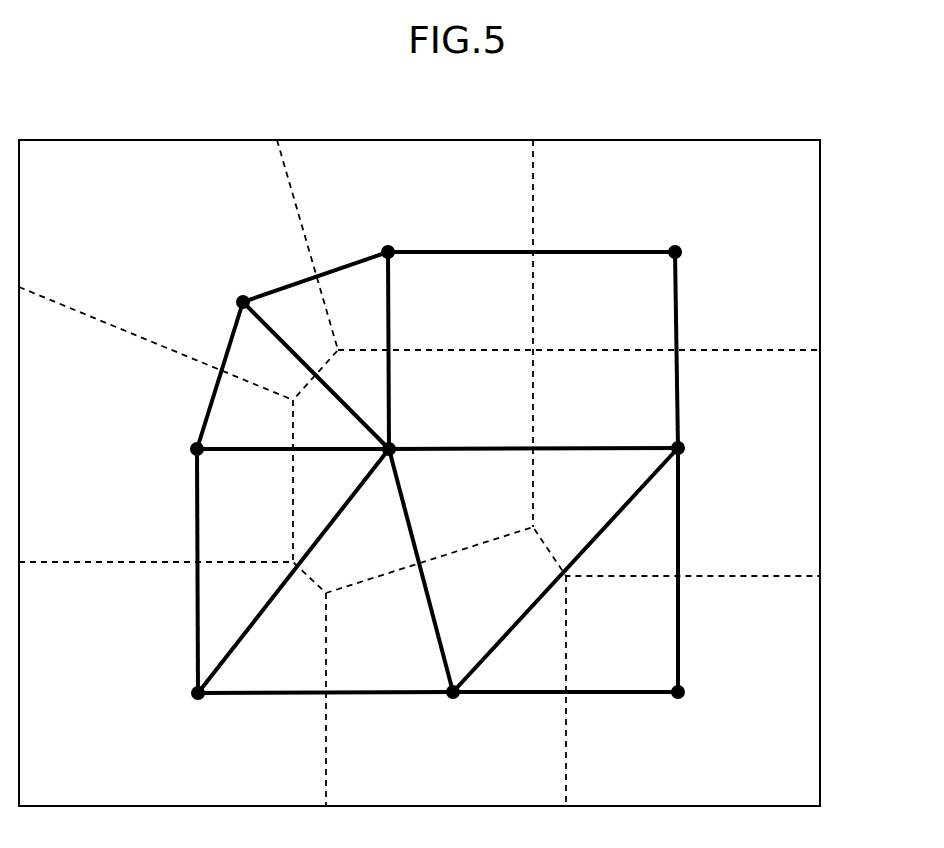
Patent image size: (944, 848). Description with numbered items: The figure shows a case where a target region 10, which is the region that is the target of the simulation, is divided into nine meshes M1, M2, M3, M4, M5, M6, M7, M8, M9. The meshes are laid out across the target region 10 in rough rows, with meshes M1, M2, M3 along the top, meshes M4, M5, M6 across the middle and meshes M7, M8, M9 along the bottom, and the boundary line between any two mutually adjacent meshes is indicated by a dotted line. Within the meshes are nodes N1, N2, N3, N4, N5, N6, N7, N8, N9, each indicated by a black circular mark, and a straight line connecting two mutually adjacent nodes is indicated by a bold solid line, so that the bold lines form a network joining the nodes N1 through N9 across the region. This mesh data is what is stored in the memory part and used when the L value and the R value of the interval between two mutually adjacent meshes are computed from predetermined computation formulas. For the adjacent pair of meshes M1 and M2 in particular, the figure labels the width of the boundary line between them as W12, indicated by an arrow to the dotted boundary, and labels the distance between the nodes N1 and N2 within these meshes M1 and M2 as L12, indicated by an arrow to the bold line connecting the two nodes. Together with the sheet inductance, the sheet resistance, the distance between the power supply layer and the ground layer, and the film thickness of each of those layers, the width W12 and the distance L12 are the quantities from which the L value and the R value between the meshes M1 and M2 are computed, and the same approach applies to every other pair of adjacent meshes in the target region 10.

The target region 10 is at (860, 183).
The mesh M1 is at (49, 162).
The mesh M2 is at (406, 160).
The mesh M3 is at (752, 157).
The mesh M4 is at (50, 342).
The mesh M5 is at (481, 372).
The mesh M6 is at (770, 368).
The mesh M7 is at (50, 590).
The mesh M8 is at (500, 758).
The mesh M9 is at (770, 595).
The node N1 is at (224, 298).
The node N2 is at (402, 267).
The node N3 is at (686, 236).
The node N4 is at (178, 450).
The node N5 is at (406, 434).
The node N6 is at (697, 438).
The node N7 is at (180, 707).
The node N8 is at (455, 711).
The node N9 is at (699, 692).
The width of the boundary line W12 is at (296, 200).
The distance between nodes L12 is at (276, 284).